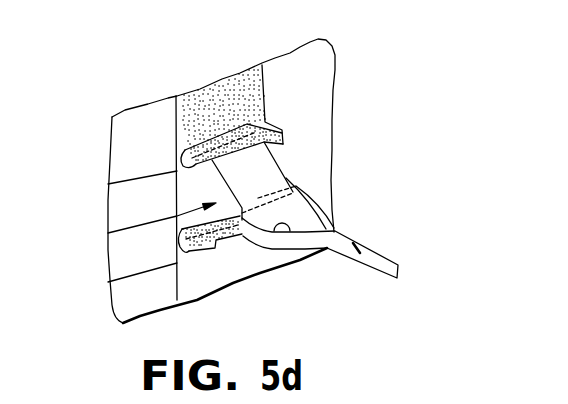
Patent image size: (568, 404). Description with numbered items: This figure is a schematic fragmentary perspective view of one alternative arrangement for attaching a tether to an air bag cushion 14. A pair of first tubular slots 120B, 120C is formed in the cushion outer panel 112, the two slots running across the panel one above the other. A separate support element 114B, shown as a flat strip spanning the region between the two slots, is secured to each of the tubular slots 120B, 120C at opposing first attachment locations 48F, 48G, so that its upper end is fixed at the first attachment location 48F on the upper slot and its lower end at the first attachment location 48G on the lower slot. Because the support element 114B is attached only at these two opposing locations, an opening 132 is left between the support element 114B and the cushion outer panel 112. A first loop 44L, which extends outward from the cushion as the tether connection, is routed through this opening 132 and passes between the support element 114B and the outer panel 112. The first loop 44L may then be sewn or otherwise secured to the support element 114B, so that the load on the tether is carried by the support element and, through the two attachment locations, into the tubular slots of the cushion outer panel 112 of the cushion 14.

The cushion 14 is at (142, 128).
The cushion outer panel 112 is at (203, 120).
The first attachment location 48F is at (249, 140).
The support element 114B is at (277, 182).
The first loop 44L is at (333, 193).
The first tubular slot 120B is at (108, 184).
The opening 132 is at (108, 233).
The first tubular slot 120C is at (108, 282).
The first attachment location 48G is at (238, 243).